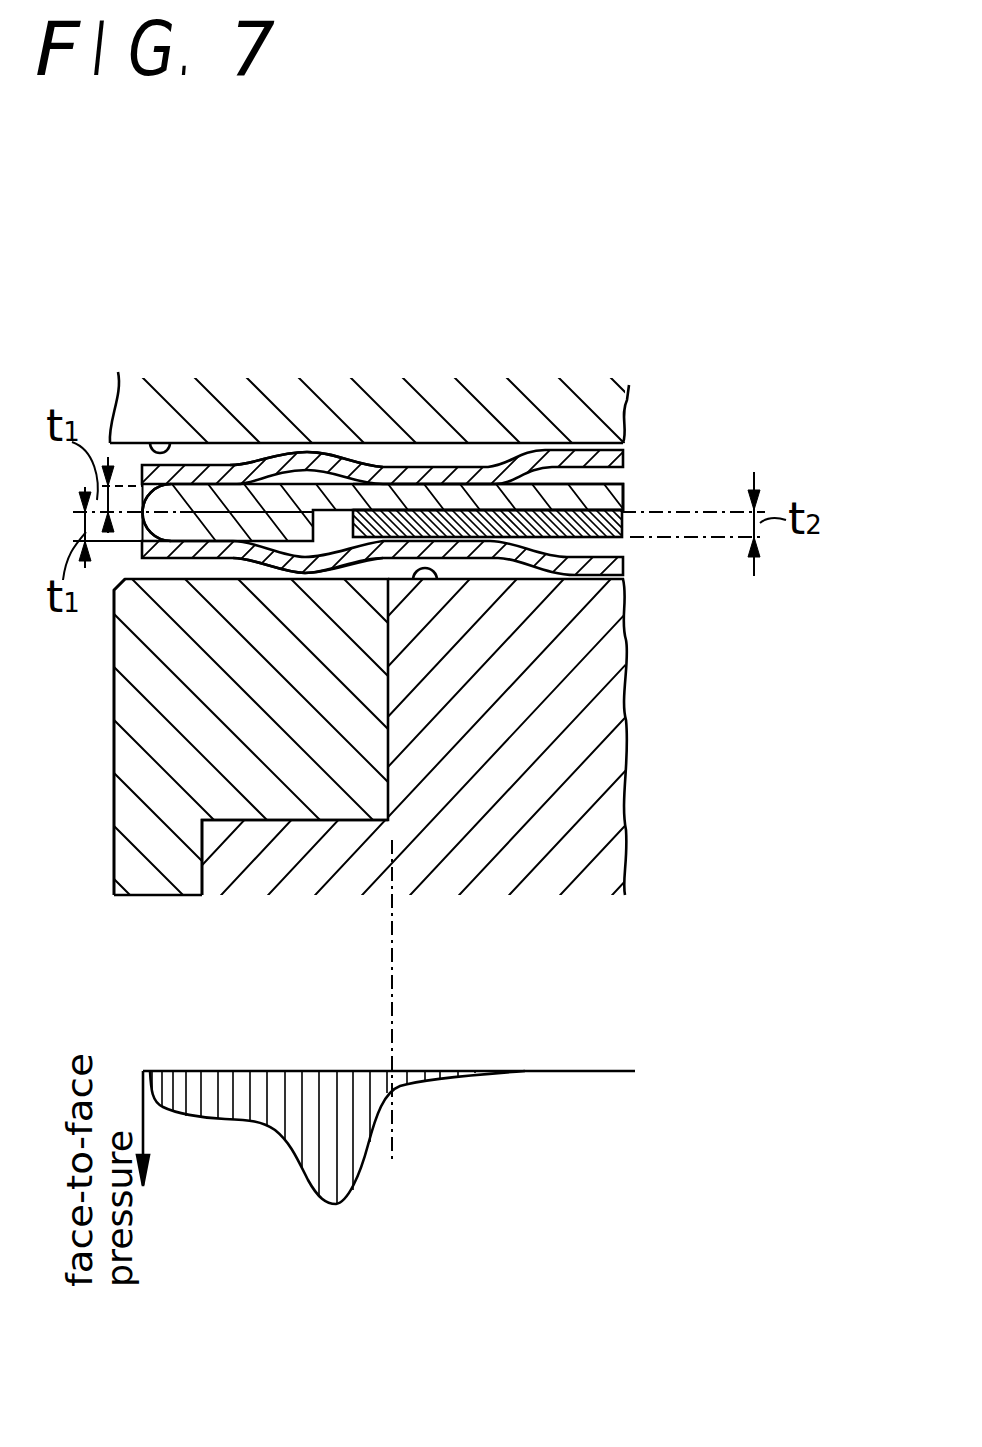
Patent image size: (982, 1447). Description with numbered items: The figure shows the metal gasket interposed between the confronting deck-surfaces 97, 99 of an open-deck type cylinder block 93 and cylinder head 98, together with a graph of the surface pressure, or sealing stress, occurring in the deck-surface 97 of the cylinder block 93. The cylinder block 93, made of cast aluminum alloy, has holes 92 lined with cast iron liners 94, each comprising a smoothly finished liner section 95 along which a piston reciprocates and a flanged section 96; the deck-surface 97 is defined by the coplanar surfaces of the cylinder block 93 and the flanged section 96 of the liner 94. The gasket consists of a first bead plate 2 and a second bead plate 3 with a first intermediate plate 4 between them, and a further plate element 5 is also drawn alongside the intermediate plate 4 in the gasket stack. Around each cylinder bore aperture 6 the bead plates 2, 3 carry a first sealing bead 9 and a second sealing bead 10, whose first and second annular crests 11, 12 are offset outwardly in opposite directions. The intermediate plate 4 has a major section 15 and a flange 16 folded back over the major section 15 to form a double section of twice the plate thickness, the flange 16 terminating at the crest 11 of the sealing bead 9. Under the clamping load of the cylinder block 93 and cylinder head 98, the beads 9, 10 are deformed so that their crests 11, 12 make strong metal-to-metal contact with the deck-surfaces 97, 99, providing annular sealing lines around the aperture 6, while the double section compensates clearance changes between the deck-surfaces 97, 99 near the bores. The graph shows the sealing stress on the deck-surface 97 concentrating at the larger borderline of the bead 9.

The first bead plate 2 is at (630, 570).
The second bead plate 3 is at (440, 467).
The first intermediate plate 4 is at (632, 497).
The compensating plate 5 is at (612, 536).
The cylinder bore aperture 6 is at (86, 527).
The first sealing bead 9 is at (282, 572).
The second sealing bead 10 is at (280, 453).
The first annular crest 11 is at (325, 562).
The second annular crest 12 is at (318, 453).
The major section 15 is at (198, 498).
The flange 16 is at (212, 523).
The hole 92 is at (200, 852).
The cylinder block 93 is at (523, 710).
The liner 94 is at (133, 752).
The liner section 95 is at (163, 873).
The flanged section 96 is at (305, 670).
The deck-surface 97 is at (433, 580).
The cylinder head 98 is at (514, 422).
The deck-surface 99 is at (146, 440).